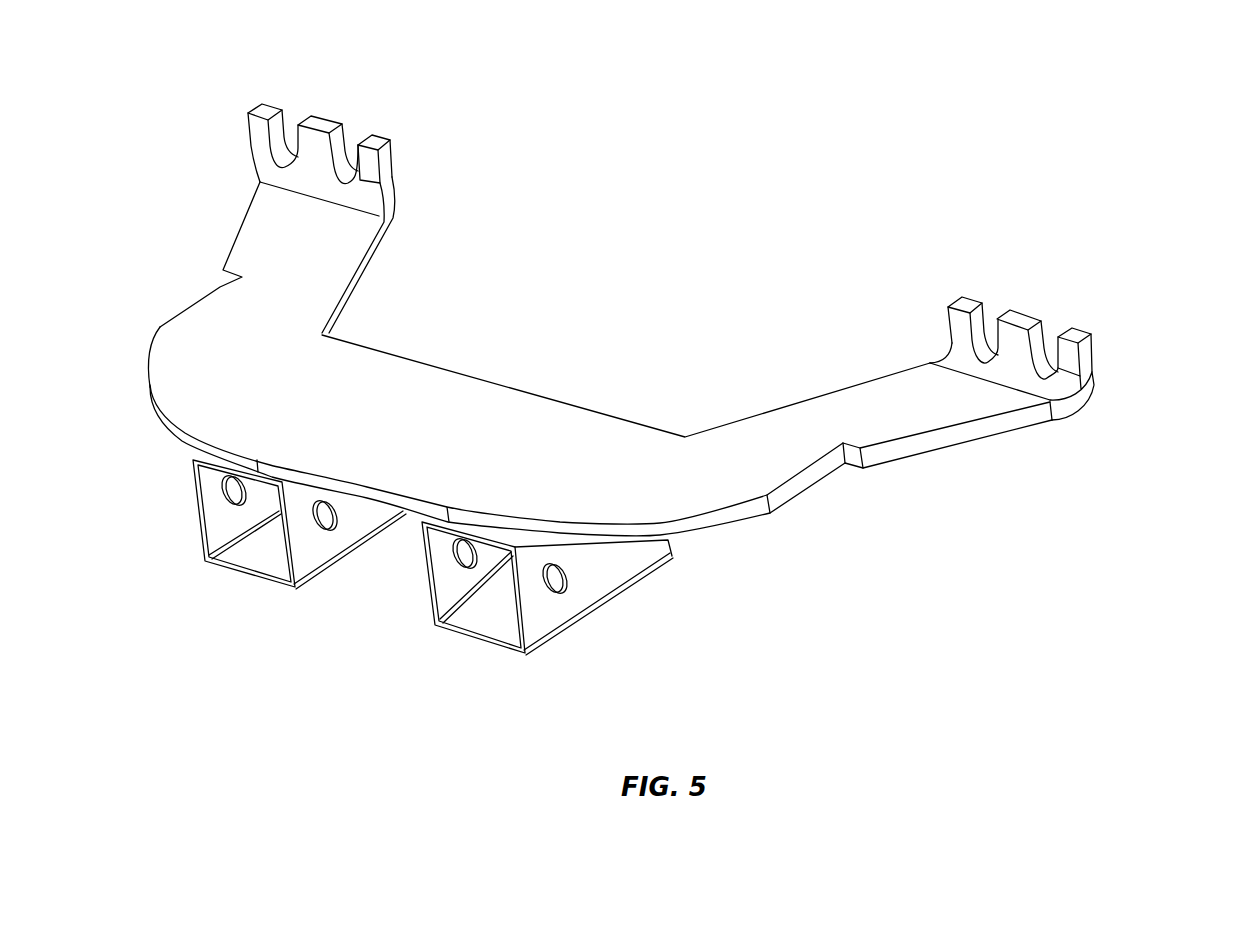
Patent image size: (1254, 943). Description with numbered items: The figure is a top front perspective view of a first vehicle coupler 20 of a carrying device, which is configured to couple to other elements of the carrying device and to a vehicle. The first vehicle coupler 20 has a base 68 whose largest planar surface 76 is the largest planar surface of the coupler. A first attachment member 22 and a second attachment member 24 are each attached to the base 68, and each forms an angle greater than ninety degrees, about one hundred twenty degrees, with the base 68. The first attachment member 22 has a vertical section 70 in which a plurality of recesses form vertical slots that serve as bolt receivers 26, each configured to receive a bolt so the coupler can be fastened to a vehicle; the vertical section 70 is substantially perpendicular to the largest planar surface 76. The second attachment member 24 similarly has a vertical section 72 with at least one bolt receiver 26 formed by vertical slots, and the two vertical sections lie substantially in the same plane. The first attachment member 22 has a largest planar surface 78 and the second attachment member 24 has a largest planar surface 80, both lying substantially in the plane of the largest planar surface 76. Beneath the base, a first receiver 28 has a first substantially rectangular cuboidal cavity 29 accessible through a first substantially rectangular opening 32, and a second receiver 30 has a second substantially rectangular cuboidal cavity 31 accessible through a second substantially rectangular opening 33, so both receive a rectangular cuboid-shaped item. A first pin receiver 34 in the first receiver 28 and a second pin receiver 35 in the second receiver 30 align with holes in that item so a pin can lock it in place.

The first vehicle coupler 20 is at (672, 383).
The first attachment member 22 is at (297, 221).
The second attachment member 24 is at (1027, 386).
The bolt receivers 26 is at (288, 118).
The first receiver 28 is at (265, 567).
The first substantially rectangular cuboidal cavity 29 is at (250, 563).
The second receiver 30 is at (527, 623).
The second substantially rectangular cuboidal cavity 31 is at (435, 628).
The first substantially rectangular opening 32 is at (268, 583).
The second substantially rectangular opening 33 is at (473, 635).
The first pin receiver 34 is at (325, 533).
The second pin receiver 35 is at (563, 583).
The base 68 is at (598, 410).
The vertical section 70 is at (393, 153).
The vertical section 72 is at (1083, 357).
The largest planar surface 76 is at (428, 380).
The largest planar surface 78 is at (332, 248).
The largest planar surface 80 is at (915, 380).